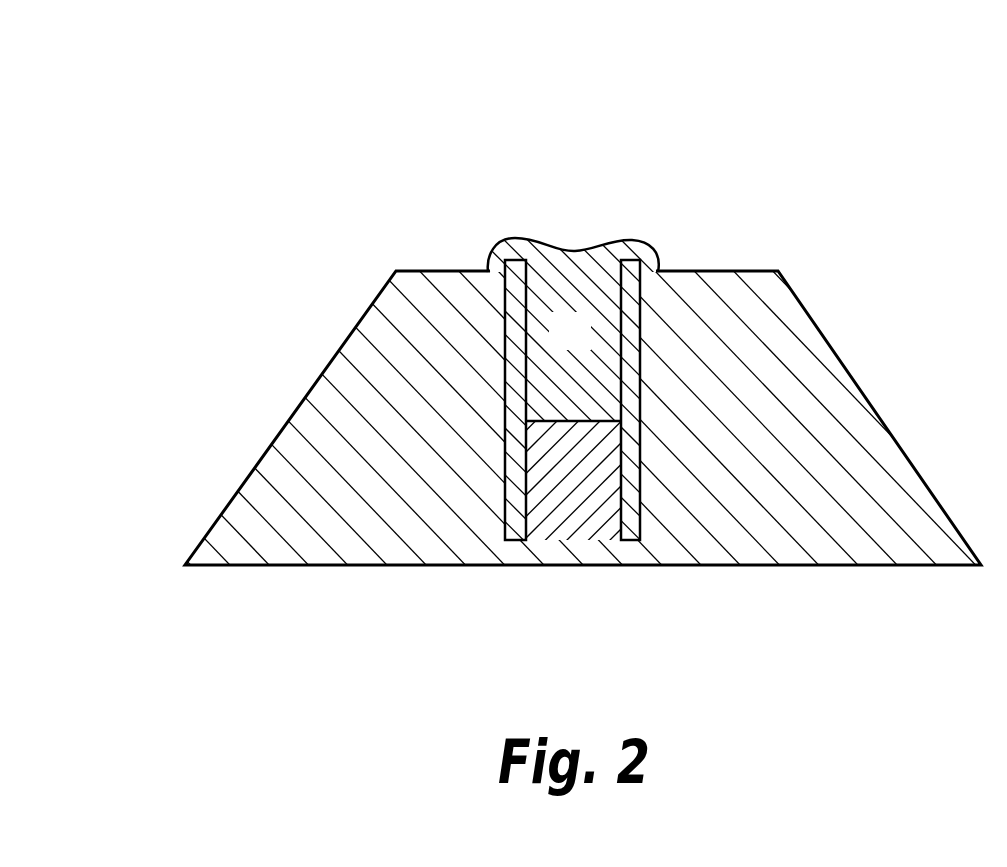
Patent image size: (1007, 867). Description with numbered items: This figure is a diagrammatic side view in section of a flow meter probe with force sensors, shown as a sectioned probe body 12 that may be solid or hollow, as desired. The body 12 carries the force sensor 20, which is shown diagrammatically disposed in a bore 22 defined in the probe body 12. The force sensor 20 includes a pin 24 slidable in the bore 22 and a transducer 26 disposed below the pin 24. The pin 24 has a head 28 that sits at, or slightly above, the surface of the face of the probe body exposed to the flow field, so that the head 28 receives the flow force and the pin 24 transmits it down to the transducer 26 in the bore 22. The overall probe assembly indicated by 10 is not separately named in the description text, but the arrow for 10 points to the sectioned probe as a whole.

The cutting tool assembly 10 is at (503, 332).
The probe body 12 is at (314, 378).
The force sensor 20 is at (572, 332).
The bore 22 is at (647, 520).
The pin 24 is at (583, 347).
The transducer 26 is at (572, 515).
The head 28 is at (601, 250).